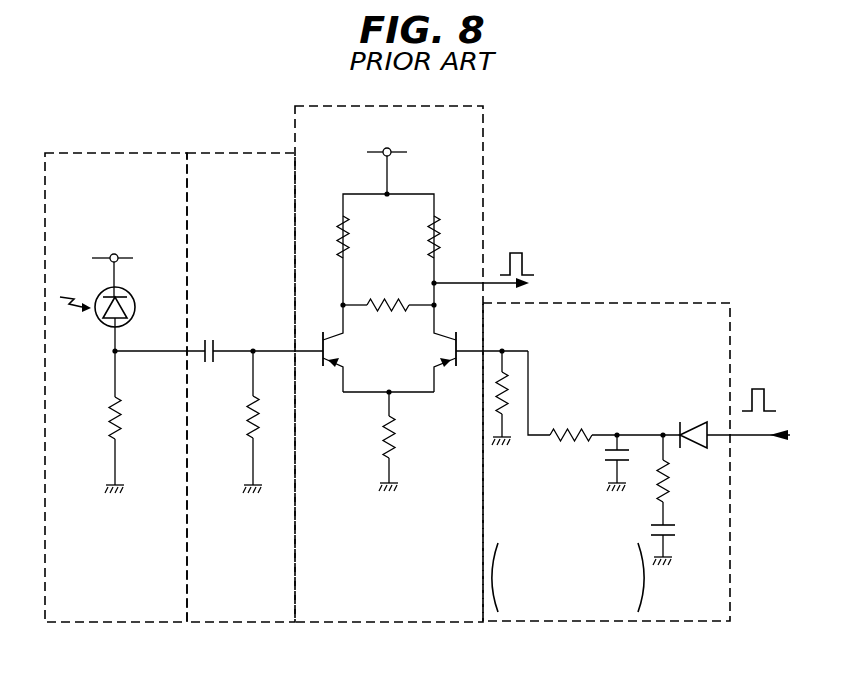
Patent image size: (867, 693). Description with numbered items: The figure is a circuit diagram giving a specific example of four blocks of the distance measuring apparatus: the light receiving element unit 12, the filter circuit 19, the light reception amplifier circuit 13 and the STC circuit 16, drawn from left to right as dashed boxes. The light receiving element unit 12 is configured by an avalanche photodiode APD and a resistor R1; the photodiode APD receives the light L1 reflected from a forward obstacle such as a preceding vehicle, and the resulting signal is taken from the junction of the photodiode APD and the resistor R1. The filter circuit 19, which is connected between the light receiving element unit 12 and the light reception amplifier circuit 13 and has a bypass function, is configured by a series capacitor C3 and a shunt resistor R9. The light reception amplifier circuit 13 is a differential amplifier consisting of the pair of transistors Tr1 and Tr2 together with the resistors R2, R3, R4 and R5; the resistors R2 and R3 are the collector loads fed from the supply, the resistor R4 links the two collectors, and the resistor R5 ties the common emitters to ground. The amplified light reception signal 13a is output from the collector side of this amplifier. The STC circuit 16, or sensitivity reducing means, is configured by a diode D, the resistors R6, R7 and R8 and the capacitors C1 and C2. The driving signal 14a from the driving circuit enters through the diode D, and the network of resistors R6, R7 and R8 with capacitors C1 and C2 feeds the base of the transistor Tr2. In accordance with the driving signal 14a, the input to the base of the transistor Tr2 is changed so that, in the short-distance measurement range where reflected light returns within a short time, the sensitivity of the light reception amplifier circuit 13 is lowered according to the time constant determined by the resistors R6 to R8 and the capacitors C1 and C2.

The light receiving element unit 12 is at (103, 153).
The filter circuit 19 is at (232, 153).
The light reception amplifier circuit 13 is at (483, 133).
The light reception signal 13a is at (517, 253).
The STC circuit 16 is at (672, 303).
The driving signal 14a is at (757, 389).
The avalanche photodiode APD is at (135, 307).
The reflected light L1 is at (75, 290).
The resistor R1 is at (130, 418).
The resistor R2 is at (327, 237).
The resistor R3 is at (450, 237).
The resistor R4 is at (388, 291).
The resistor R5 is at (404, 437).
The resistor R6 is at (512, 387).
The resistor R7 is at (571, 419).
The resistor R8 is at (678, 481).
The resistor R9 is at (268, 417).
The capacitor C1 is at (608, 463).
The capacitor C2 is at (677, 544).
The capacitor C3 is at (212, 338).
The transistor Tr1 is at (323, 340).
The transistor Tr2 is at (456, 340).
The diode D is at (693, 419).